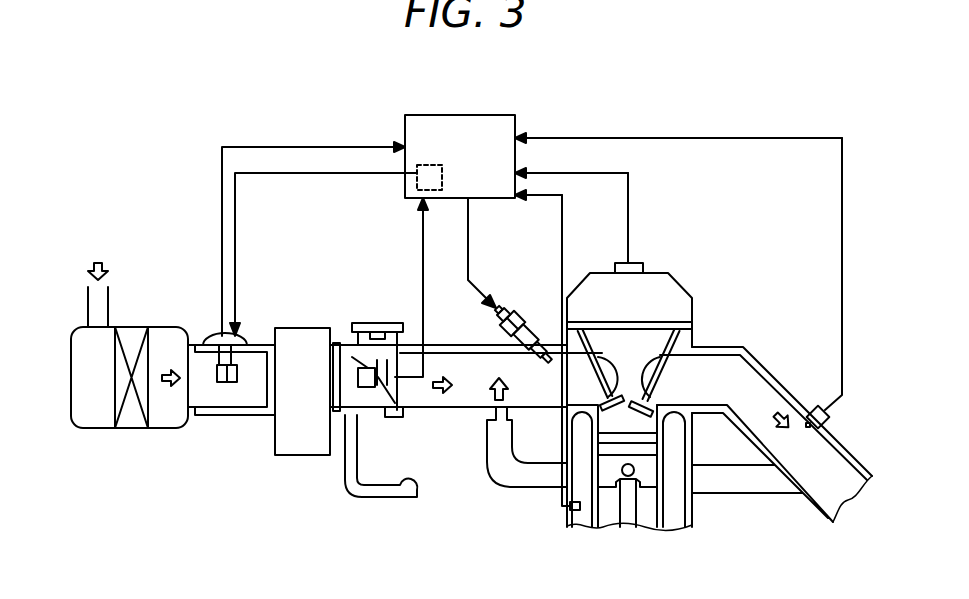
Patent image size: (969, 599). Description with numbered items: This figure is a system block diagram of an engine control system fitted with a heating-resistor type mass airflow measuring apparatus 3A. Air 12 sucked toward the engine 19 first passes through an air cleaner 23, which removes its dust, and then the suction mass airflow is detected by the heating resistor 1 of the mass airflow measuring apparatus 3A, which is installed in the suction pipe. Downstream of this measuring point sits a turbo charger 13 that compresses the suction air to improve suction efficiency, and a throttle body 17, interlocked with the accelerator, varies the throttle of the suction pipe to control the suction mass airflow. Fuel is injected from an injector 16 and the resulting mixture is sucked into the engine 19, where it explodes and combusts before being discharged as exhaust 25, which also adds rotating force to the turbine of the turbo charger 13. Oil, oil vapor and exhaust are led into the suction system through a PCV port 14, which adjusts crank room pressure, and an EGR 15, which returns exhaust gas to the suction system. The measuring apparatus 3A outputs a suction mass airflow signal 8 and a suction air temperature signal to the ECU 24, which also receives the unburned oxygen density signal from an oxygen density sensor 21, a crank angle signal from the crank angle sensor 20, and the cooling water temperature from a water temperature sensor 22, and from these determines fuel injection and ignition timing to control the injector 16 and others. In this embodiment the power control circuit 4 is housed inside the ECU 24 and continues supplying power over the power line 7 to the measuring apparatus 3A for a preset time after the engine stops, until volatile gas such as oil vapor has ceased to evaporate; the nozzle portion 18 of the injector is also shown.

The heating resistor 1 is at (228, 385).
The heating-resistor type mass airflow measuring apparatus 3A is at (208, 334).
The power control circuit 4 is at (430, 164).
The power line 7 is at (254, 171).
The suction mass airflow signal 8 is at (325, 145).
The air 12 is at (99, 258).
The turbo charger 13 is at (300, 457).
The PCV port 14 is at (408, 499).
The EGR 15 is at (503, 489).
The injector 16 is at (522, 312).
The throttle body 17 is at (375, 322).
The injector nozzle 18 is at (402, 366).
The engine 19 is at (695, 512).
The crank angle sensor 20 is at (645, 266).
The oxygen density sensor 21 is at (831, 418).
The water temperature sensor 22 is at (560, 513).
The air cleaner 23 is at (98, 438).
The ECU 24 is at (458, 114).
The exhaust 25 is at (488, 385).